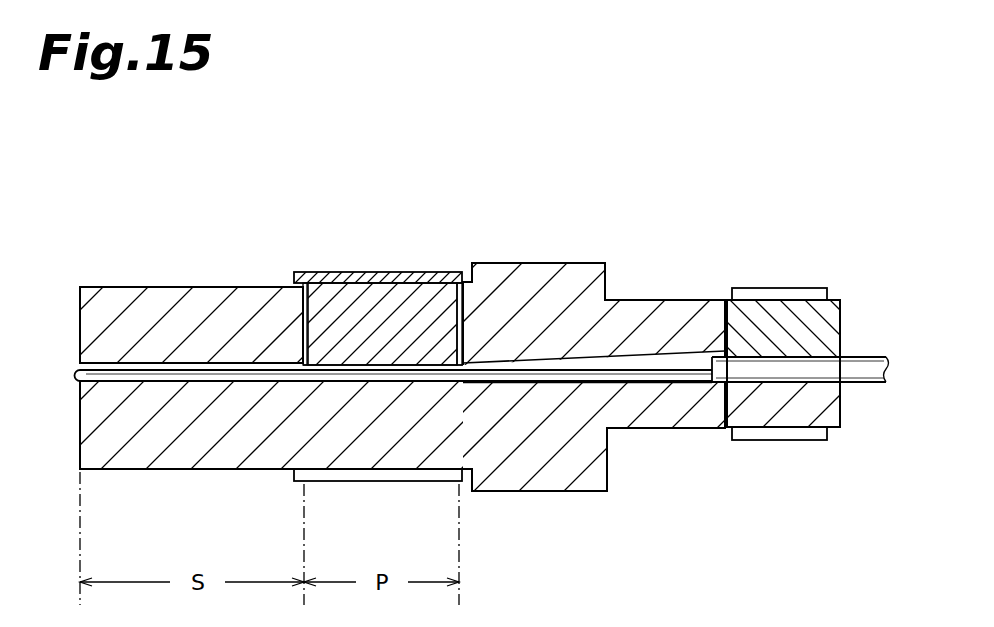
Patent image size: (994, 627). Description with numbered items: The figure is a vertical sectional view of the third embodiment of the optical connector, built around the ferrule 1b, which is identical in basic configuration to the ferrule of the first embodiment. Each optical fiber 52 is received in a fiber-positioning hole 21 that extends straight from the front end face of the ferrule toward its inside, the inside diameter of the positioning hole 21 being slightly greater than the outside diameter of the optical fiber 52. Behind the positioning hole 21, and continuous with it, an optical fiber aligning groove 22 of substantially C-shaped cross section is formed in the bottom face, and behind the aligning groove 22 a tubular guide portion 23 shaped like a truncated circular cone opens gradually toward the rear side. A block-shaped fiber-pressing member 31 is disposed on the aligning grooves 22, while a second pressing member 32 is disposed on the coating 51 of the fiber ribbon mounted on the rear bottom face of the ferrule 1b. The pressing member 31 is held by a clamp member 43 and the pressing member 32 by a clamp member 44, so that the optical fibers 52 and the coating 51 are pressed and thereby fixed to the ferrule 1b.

The ferrule 1b is at (586, 270).
The fiber-positioning hole 21 is at (153, 380).
The optical fiber aligning groove 22 is at (340, 367).
The tubular guide portion 23 is at (668, 350).
The fiber-pressing member 31 is at (441, 290).
The pressing member 32 is at (828, 327).
The clamp member 43 is at (393, 275).
The clamp member 44 is at (785, 288).
The coating 51 is at (878, 380).
The optical fiber 52 is at (660, 386).